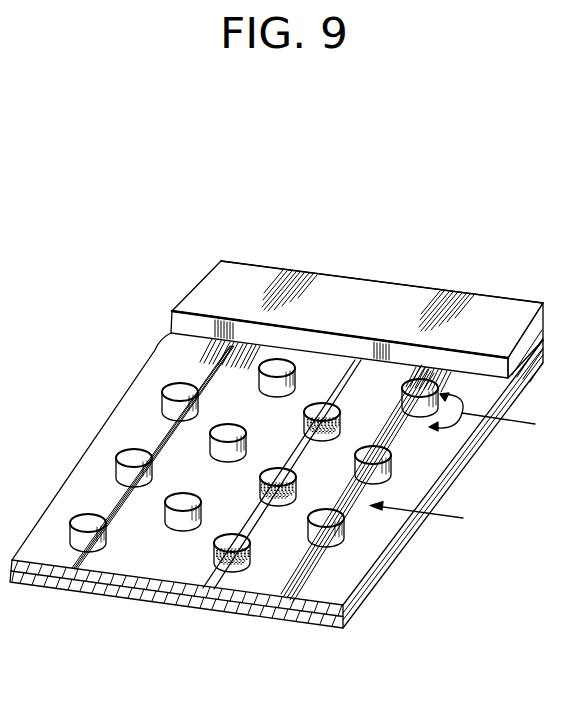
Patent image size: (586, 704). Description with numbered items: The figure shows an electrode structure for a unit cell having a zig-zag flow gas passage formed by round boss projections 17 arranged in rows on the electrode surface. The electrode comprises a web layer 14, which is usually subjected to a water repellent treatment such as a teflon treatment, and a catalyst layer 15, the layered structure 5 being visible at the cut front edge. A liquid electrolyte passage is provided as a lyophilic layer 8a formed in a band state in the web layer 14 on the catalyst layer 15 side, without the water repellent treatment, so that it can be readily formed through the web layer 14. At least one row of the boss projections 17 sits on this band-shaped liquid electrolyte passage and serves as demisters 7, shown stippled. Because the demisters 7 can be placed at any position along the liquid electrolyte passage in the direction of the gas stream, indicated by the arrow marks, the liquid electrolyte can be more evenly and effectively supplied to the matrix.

The substrate 5 is at (42, 588).
The demisters 7 is at (325, 404).
The lyophilic layer 8a is at (352, 411).
The web layer 14 is at (300, 608).
The catalyst layer 15 is at (110, 588).
The round boss projections 17 is at (167, 388).